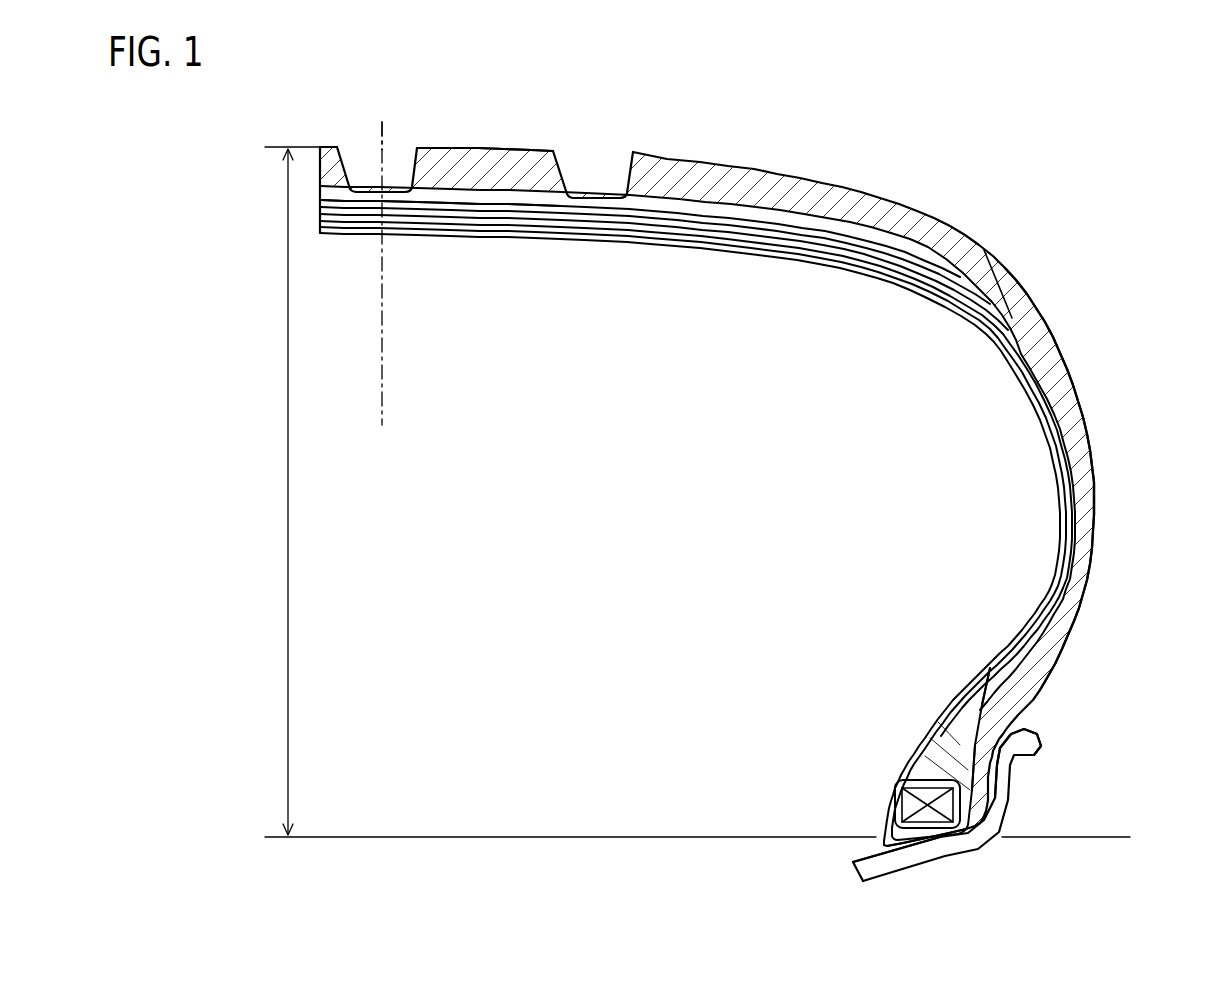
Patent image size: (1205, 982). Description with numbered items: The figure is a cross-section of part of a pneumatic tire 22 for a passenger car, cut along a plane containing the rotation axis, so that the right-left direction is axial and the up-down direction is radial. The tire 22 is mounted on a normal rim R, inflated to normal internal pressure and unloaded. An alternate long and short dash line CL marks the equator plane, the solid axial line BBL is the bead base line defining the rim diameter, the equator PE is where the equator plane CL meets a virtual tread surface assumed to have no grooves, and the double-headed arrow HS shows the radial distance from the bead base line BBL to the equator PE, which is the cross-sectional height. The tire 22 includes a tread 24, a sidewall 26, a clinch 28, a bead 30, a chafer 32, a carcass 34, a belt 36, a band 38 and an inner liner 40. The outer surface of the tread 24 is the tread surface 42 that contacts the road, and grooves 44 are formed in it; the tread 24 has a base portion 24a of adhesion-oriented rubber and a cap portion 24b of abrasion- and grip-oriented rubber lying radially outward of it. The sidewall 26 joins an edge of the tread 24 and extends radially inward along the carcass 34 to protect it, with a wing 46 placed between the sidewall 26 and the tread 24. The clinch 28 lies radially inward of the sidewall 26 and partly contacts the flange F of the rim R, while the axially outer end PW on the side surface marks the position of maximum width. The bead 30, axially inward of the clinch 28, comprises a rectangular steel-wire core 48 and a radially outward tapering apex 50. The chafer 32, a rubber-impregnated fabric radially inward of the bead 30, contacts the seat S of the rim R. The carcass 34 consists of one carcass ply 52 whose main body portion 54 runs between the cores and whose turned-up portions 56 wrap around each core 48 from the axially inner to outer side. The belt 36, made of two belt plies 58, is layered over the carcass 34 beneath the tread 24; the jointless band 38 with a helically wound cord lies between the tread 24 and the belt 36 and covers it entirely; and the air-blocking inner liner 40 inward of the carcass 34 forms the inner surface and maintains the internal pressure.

The pneumatic tire 22 is at (1060, 222).
The tread 24 is at (704, 157).
The base portion 24a is at (665, 201).
The cap portion 24b is at (767, 169).
The sidewall 26 is at (1089, 456).
The clinch 28 is at (1031, 683).
The bead 30 is at (867, 775).
The chafer 32 is at (878, 847).
The carcass 34 is at (517, 237).
The carcass ply 52 is at (941, 754).
The belt 36 is at (664, 287).
The belt ply 58 is at (588, 236).
The band 38 is at (449, 196).
The inner liner 40 is at (712, 247).
The tread surface 42 is at (490, 147).
The groove 44 is at (409, 149).
The wing 46 is at (1013, 308).
The core 48 is at (897, 792).
The apex 50 is at (920, 765).
The main body portion 54 is at (993, 665).
The turned-up portion 56 is at (985, 718).
The equator PE is at (381, 146).
The equator plane CL is at (384, 395).
The cross-sectional height HS is at (285, 491).
The bead base line BBL is at (384, 834).
The axially outer end PW is at (1096, 497).
The rim R is at (955, 858).
The seat S is at (917, 856).
The flange F is at (993, 788).